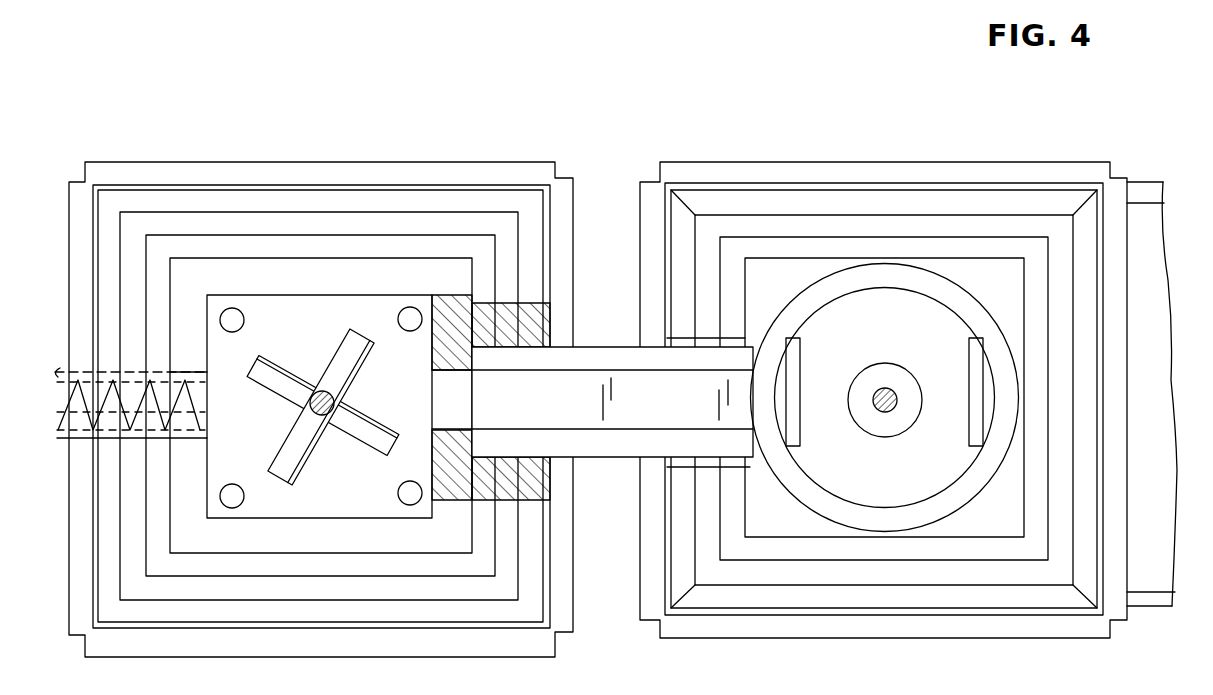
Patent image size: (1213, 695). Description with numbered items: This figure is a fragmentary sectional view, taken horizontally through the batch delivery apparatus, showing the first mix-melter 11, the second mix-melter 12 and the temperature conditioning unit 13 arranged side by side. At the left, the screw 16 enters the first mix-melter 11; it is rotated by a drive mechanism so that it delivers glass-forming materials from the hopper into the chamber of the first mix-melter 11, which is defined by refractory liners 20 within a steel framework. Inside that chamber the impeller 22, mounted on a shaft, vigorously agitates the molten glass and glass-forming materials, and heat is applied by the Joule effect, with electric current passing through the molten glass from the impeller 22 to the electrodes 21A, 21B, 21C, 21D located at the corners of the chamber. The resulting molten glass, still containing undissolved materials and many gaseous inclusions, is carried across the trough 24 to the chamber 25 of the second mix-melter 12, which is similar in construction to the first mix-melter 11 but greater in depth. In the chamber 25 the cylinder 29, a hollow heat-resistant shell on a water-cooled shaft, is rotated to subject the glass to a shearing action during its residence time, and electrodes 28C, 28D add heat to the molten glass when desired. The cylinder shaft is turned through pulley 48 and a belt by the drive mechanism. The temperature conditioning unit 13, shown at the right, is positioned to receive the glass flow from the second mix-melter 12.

The first mix-melter 11 is at (419, 156).
The second mix-melter 12 is at (879, 162).
The temperature conditioning unit 13 is at (1166, 212).
The screw 16 is at (55, 376).
The refractory liners 20 is at (330, 598).
The electrode 21A is at (244, 496).
The electrode 21B is at (234, 309).
The electrode 21C is at (411, 307).
The electrode 21D is at (398, 493).
The impeller 22 is at (336, 353).
The trough 24 is at (585, 357).
The chamber 25 is at (818, 488).
The electrode 28C is at (808, 372).
The electrode 28D is at (968, 408).
The cylinder 29 is at (897, 364).
The pulley 48 is at (320, 518).